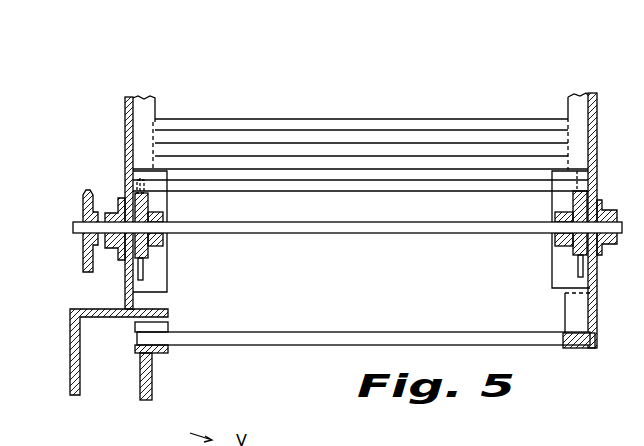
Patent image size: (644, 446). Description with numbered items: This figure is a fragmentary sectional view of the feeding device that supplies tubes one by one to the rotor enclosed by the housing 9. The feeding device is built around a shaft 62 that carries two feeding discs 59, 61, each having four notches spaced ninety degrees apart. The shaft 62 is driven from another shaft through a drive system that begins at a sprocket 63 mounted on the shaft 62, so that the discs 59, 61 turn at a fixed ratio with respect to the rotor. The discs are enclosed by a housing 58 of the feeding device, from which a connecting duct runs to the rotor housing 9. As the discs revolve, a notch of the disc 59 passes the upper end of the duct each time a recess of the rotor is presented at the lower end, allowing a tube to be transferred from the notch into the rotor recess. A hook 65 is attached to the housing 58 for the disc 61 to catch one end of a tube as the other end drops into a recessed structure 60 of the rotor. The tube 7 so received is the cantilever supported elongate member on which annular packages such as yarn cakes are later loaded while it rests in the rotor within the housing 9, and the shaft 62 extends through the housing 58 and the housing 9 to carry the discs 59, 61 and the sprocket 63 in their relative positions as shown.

The tube 7 is at (430, 331).
The housing 9 is at (70, 343).
The housing 58 is at (167, 277).
The disc 59 is at (152, 200).
The recessed structure 60 is at (168, 324).
The disc 61 is at (572, 205).
The shaft 62 is at (378, 229).
The sprocket 63 is at (82, 200).
The hook 65 is at (596, 309).